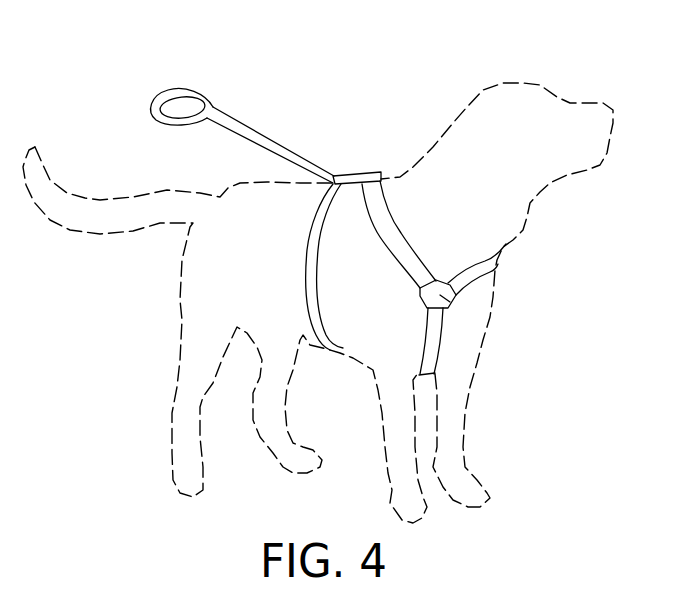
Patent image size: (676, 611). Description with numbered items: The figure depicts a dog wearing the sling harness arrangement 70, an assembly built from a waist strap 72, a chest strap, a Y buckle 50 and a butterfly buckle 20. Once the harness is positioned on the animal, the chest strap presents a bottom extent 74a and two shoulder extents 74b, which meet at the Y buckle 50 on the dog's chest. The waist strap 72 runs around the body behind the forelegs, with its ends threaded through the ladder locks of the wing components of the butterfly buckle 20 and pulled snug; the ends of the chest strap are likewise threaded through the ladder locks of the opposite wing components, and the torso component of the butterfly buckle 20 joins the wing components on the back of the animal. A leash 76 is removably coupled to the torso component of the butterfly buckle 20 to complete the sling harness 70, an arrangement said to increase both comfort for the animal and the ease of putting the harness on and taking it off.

The sling harness arrangement 70 is at (356, 119).
The leash 76 is at (215, 110).
The butterfly buckle 20 is at (377, 173).
The waist strap 72 is at (308, 268).
The shoulder extents 74b is at (395, 247).
The Y buckle 50 is at (444, 299).
The bottom extent 74a is at (435, 358).